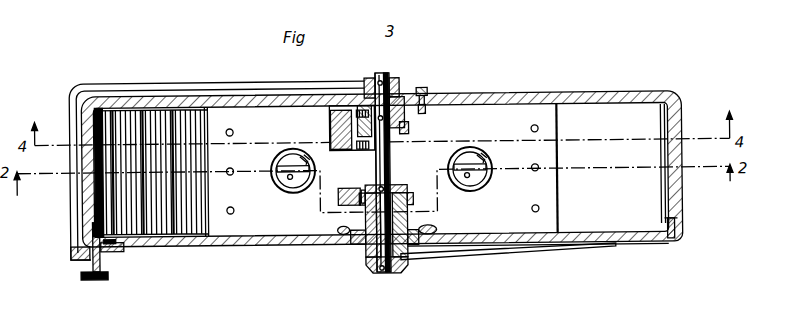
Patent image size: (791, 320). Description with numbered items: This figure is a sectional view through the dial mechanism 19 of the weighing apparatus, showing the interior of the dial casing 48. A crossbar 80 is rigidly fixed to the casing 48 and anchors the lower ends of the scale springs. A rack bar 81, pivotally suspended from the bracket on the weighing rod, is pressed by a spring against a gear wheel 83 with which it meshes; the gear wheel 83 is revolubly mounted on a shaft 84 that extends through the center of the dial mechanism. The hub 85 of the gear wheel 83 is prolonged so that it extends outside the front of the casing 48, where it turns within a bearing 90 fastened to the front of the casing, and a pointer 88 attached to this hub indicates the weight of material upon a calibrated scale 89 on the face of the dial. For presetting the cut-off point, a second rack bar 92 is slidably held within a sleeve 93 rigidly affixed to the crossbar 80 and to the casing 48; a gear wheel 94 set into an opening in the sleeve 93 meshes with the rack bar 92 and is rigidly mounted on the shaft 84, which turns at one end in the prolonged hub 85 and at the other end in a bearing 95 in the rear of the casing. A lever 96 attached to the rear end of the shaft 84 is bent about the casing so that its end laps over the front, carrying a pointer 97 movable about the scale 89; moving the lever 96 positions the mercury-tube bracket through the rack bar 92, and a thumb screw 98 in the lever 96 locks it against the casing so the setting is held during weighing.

The dial mechanism 19 is at (683, 210).
The dial casing 48 is at (593, 100).
The crossbar 80 is at (543, 223).
The rack bar 81 is at (339, 198).
The gear wheel 83 is at (413, 199).
The shaft 84 is at (391, 173).
The hub 85 is at (400, 222).
The pointer 88 is at (485, 257).
The calibrated scale 89 is at (643, 247).
The bearing 90 is at (357, 242).
The rack bar 92 is at (348, 122).
The sleeve 93 is at (331, 131).
The gear wheel 94 is at (409, 128).
The bearing 95 is at (408, 93).
The lever 96 is at (253, 81).
The pointer 97 is at (115, 249).
The thumb screw 98 is at (95, 278).